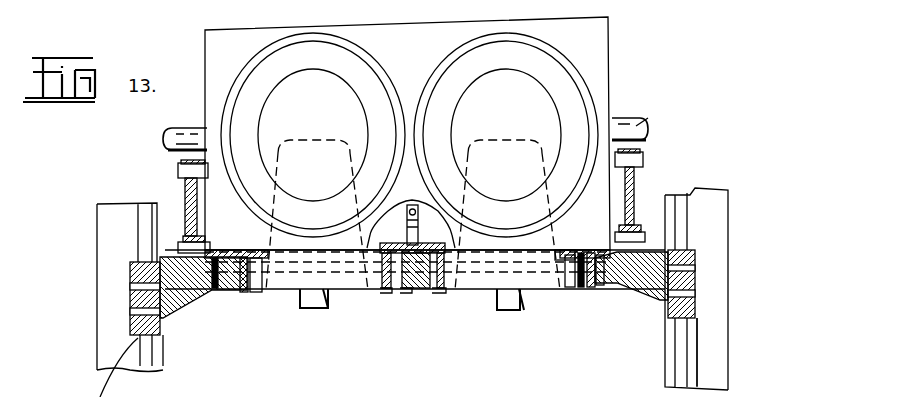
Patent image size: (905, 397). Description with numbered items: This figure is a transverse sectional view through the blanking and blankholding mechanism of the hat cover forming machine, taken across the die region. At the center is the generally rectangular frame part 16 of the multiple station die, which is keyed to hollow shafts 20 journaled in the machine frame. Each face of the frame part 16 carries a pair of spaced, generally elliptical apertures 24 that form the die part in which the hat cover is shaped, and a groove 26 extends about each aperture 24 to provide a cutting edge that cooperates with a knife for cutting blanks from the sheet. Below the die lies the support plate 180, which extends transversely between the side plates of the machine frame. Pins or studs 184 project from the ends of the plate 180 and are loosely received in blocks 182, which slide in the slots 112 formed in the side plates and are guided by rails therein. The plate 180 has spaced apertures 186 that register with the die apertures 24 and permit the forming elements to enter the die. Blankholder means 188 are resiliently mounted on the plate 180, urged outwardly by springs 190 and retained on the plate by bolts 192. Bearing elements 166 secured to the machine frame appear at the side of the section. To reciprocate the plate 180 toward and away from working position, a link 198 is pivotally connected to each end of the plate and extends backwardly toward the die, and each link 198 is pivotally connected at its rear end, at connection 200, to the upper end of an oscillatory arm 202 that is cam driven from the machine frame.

The rectangular frame part 16 is at (611, 62).
The hollow shaft 20 is at (170, 133).
The elliptical aperture 24 is at (268, 250).
The groove 26 is at (406, 289).
The slot 112 is at (110, 222).
The bearing element 166 is at (262, 295).
The support plate 180 is at (181, 304).
The block 182 is at (697, 318).
The pin 184 is at (133, 300).
The aperture 186 is at (260, 293).
The blankholder means 188 is at (572, 254).
The spring 190 is at (597, 285).
The bolt 192 is at (250, 295).
The link 198 is at (633, 186).
The pivotal connection 200 is at (177, 172).
The oscillatory arm 202 is at (183, 181).